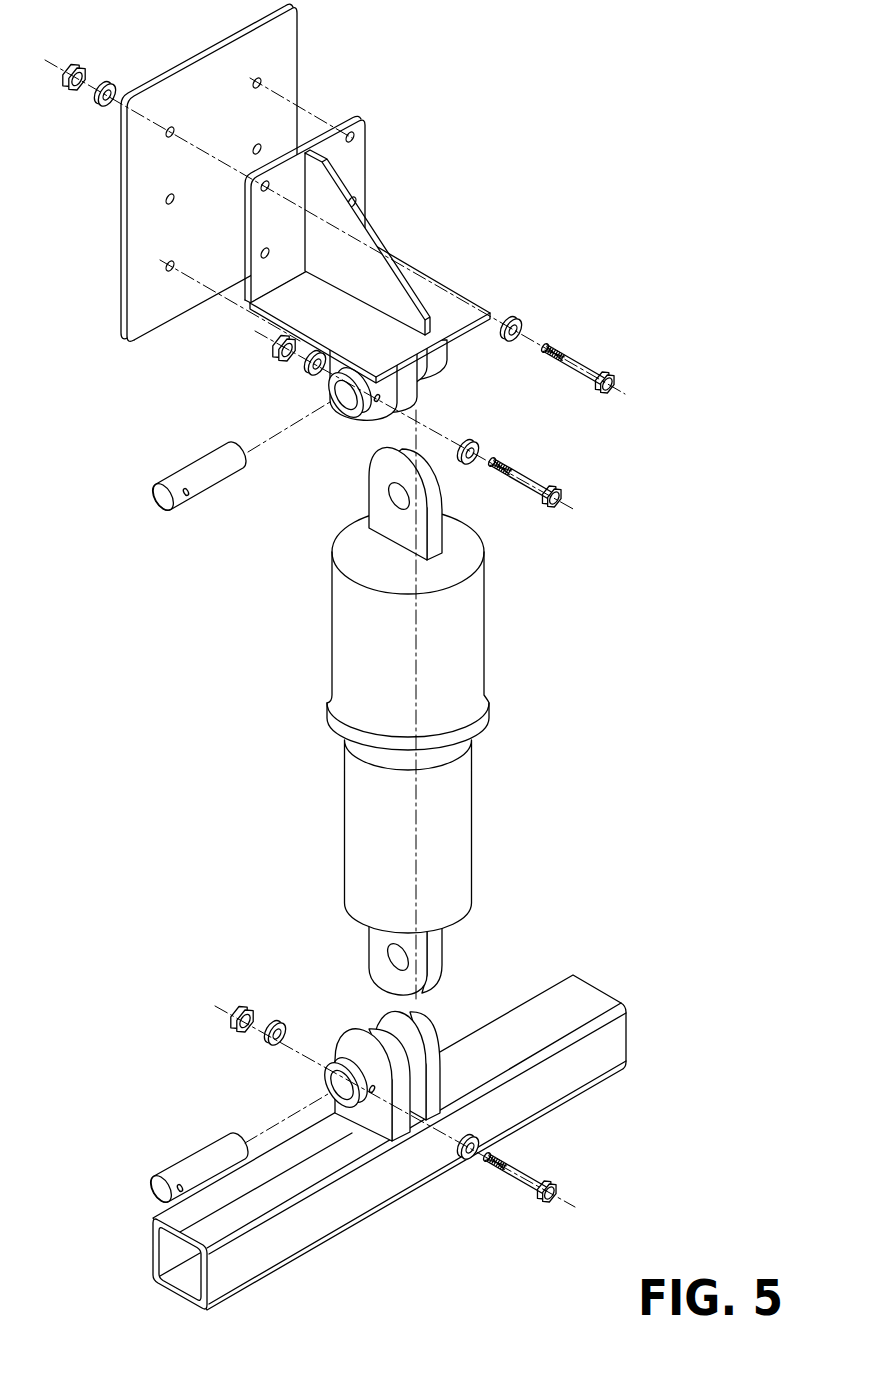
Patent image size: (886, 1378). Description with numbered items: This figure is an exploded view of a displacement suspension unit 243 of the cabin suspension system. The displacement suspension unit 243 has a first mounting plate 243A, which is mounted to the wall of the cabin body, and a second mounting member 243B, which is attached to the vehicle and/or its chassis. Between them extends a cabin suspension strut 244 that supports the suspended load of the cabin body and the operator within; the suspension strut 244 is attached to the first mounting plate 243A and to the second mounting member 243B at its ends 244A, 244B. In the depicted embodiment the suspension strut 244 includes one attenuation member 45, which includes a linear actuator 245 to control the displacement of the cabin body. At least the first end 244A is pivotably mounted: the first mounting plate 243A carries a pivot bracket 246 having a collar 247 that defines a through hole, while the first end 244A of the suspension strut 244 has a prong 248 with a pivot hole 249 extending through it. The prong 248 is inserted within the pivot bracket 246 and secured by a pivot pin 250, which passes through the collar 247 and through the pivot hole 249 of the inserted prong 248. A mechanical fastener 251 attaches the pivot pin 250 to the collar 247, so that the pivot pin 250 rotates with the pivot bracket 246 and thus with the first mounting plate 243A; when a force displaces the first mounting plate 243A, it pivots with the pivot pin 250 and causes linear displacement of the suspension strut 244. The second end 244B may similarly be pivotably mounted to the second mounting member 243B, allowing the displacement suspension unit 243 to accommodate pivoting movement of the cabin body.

The displacement suspension unit 243 is at (342, 657).
The first mounting plate 243A is at (314, 236).
The second mounting member 243B is at (601, 988).
The cabin suspension strut 244 is at (485, 646).
The first end of the suspension strut 244A is at (321, 549).
The second end of the suspension strut 244B is at (361, 965).
The linear actuator 245 is at (463, 836).
The attenuation member 45 is at (467, 772).
The pivot bracket 246 is at (441, 360).
The collar 247 is at (357, 413).
The prong 248 is at (417, 503).
The pivot hole 249 is at (388, 491).
The pivot pin 250 is at (210, 491).
The mechanical fastener 251 is at (531, 475).